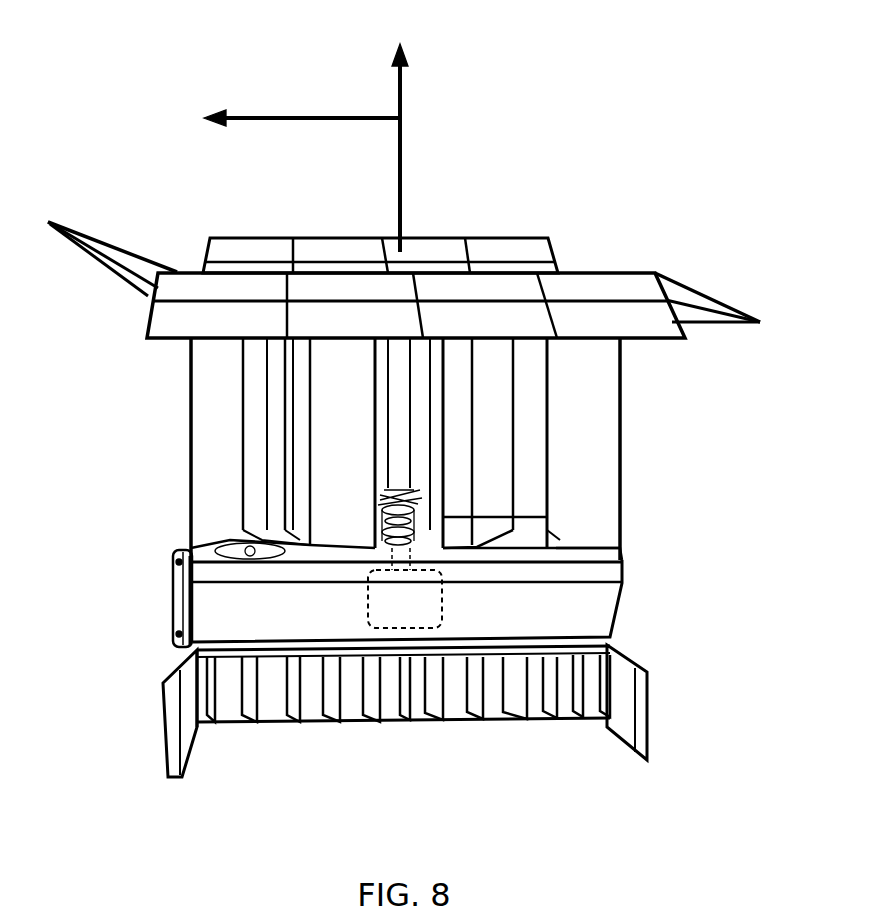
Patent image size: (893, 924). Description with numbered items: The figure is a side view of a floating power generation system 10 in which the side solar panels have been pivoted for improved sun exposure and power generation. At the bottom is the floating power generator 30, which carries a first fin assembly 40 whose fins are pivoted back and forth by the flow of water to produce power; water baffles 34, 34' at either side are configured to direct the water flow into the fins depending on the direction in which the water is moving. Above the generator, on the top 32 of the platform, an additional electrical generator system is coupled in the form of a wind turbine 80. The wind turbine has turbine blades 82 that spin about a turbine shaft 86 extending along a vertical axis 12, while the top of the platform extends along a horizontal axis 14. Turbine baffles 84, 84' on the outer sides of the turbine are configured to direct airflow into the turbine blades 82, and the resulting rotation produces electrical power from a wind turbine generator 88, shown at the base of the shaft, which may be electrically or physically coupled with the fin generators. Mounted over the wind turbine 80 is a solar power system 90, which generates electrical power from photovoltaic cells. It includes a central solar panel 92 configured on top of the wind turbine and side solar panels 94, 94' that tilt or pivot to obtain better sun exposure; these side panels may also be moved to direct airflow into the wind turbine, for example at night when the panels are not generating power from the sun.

The floating power generation system 10 is at (214, 206).
The vertical axis 12 is at (397, 92).
The horizontal axis 14 is at (398, 114).
The floating power generator 30 is at (262, 628).
The top 32 is at (557, 557).
The water baffle 34 is at (148, 740).
The water baffle 34' is at (627, 742).
The first fin assembly 40 is at (497, 684).
The wind turbine 80 is at (400, 460).
The turbine blades 82 is at (485, 385).
The turbine baffle 84 is at (133, 447).
The turbine baffle 84' is at (670, 449).
The turbine shaft 86 is at (392, 446).
The wind turbine generator 88 is at (400, 592).
The solar power system 90 is at (543, 228).
The central solar panel 92 is at (412, 298).
The side solar panel 94 is at (112, 212).
The side solar panel 94' is at (715, 253).